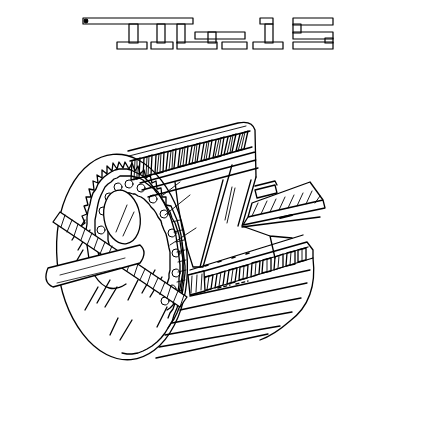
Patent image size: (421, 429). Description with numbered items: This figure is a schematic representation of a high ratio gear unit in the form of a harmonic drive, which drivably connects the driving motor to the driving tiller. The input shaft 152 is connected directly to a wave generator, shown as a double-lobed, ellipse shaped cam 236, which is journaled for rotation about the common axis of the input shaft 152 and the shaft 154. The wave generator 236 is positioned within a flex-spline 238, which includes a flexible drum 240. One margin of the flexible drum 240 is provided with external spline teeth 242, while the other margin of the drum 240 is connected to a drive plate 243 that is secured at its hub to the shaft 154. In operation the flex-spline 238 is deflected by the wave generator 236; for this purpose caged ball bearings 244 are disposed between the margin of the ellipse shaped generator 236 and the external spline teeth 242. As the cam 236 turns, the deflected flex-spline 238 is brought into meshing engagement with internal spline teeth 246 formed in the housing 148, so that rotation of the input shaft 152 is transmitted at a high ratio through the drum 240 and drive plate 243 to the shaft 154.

The housing 148 is at (253, 320).
The input shaft 152 is at (80, 298).
The shaft 154 is at (322, 195).
The wave generator 236 is at (98, 200).
The flex-spline 238 is at (176, 178).
The flexible drum 240 is at (240, 146).
The external spline teeth 242 is at (205, 282).
The drive plate 243 is at (238, 190).
The caged ball bearings 244 is at (107, 173).
The internal spline teeth 246 is at (122, 215).